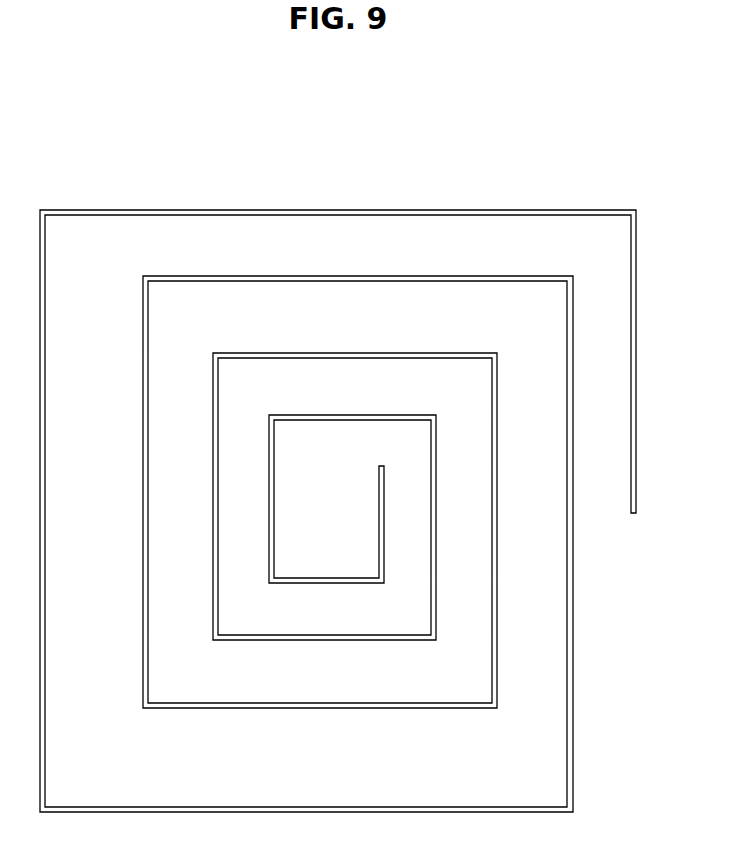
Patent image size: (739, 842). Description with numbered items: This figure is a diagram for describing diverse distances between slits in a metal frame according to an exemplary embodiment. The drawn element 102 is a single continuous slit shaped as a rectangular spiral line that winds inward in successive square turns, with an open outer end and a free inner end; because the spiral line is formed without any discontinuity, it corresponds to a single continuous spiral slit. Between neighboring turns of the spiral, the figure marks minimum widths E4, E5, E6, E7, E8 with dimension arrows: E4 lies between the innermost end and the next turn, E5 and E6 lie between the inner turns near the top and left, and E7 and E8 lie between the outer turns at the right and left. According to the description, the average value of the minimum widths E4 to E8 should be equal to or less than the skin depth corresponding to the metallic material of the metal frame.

The spiral antenna radiator 102 is at (312, 210).
The minimum width between slits E4 is at (384, 538).
The minimum width between slits E5 is at (326, 358).
The minimum width between slits E6 is at (148, 494).
The minimum width between slits E7 is at (497, 572).
The minimum width between slits E8 is at (45, 357).